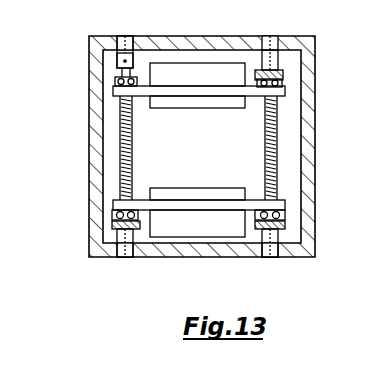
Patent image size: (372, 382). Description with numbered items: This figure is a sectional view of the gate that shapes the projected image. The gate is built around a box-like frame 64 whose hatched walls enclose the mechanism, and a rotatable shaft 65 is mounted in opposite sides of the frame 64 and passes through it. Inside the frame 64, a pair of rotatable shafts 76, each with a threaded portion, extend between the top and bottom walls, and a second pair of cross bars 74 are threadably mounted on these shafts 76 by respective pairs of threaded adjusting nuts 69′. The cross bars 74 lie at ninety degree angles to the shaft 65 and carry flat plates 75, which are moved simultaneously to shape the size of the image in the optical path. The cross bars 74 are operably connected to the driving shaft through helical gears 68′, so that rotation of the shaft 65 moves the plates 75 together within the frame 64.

The box-like frame 64 is at (96, 113).
The rotatable shaft 65 is at (315, 223).
The helical gears 68′ is at (283, 75).
The threaded adjusting nuts 69′ is at (116, 80).
The cross bars 74 is at (143, 97).
The flat plates 75 is at (211, 104).
The rotatable shafts 76 is at (127, 152).